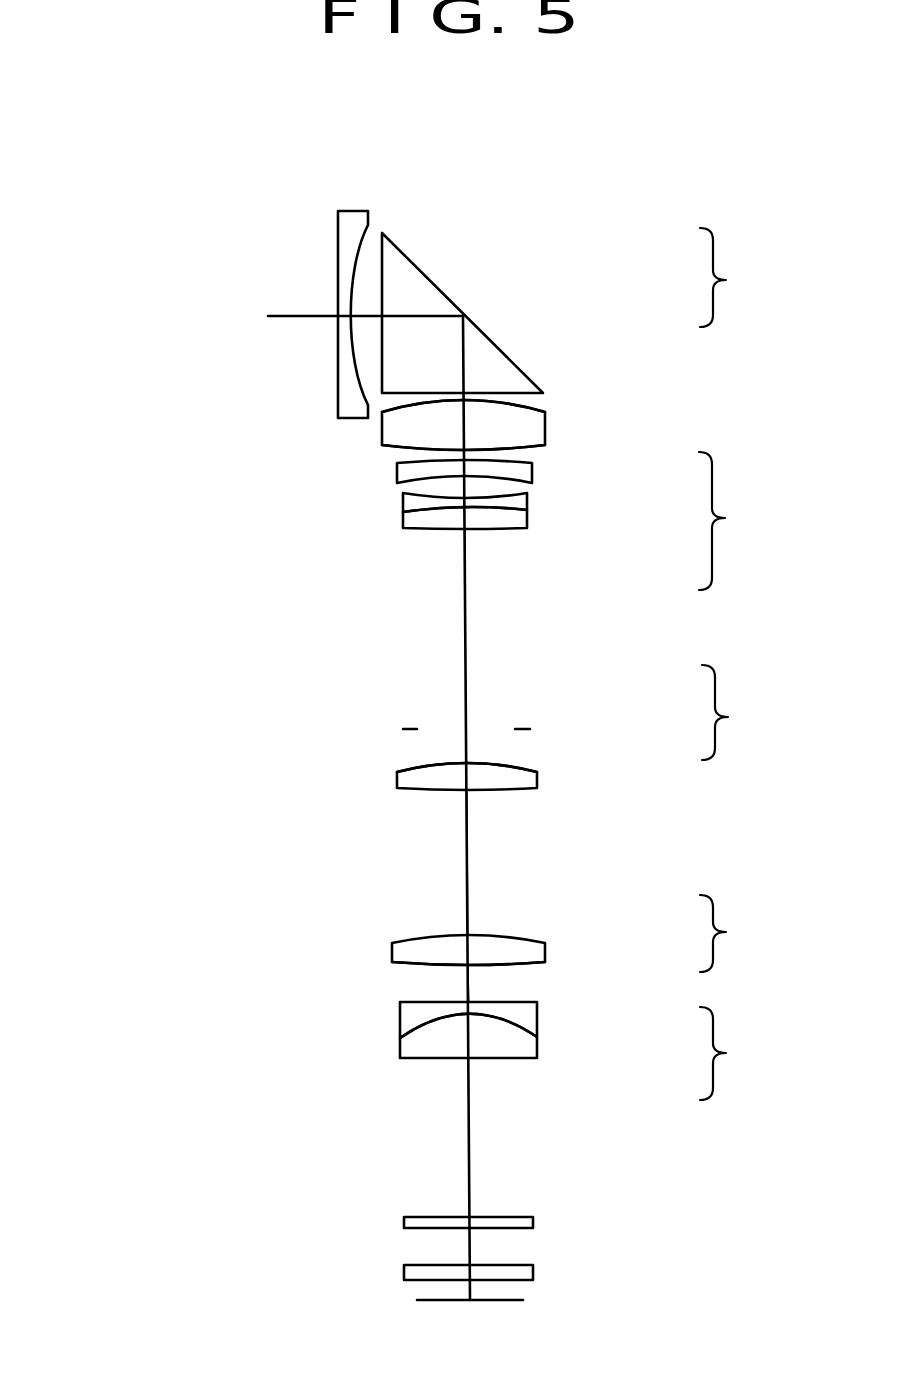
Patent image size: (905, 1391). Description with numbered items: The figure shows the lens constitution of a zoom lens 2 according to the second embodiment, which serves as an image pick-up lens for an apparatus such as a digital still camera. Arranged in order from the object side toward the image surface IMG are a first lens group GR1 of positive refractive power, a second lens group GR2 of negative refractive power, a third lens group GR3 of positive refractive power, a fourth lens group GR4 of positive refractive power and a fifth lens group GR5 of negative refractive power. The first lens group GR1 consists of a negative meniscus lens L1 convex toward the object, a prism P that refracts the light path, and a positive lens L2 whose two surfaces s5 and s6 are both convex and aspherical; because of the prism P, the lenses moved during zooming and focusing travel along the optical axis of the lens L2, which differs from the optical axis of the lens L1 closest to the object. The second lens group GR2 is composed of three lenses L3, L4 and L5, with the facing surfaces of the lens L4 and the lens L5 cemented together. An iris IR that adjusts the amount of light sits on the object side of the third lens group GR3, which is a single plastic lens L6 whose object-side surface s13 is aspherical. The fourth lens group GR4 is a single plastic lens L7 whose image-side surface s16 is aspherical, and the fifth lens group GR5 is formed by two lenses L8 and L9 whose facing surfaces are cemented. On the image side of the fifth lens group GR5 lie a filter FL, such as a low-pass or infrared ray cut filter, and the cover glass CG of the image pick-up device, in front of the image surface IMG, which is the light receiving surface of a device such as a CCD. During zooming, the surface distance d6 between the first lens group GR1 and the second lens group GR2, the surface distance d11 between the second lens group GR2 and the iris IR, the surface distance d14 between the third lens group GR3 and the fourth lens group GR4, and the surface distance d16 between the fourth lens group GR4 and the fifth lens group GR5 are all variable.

The zoom lens 2 is at (212, 356).
The lens L1 is at (368, 216).
The lens L2 is at (547, 422).
The prism P is at (437, 288).
The surface s5 is at (512, 403).
The surface s6 is at (394, 446).
The surface distance d6 is at (452, 459).
The lens L3 is at (532, 472).
The lens L4 is at (527, 500).
The lens L5 is at (527, 518).
The surface distance d11 is at (464, 600).
The iris IR is at (518, 728).
The surface s13 is at (423, 767).
The lens L6 is at (537, 777).
The surface distance d14 is at (468, 855).
The surface distance d16 is at (469, 987).
The lens L7 is at (545, 952).
The surface s16 is at (513, 965).
The lens L8 is at (537, 1015).
The lens L9 is at (537, 1048).
The filter FL is at (533, 1222).
The cover glass CG is at (533, 1272).
The image surface IMG is at (436, 1300).
The first lens group GR1 is at (743, 277).
The second lens group GR2 is at (744, 521).
The third lens group GR3 is at (747, 712).
The fourth lens group GR4 is at (746, 933).
The fifth lens group GR5 is at (746, 1053).